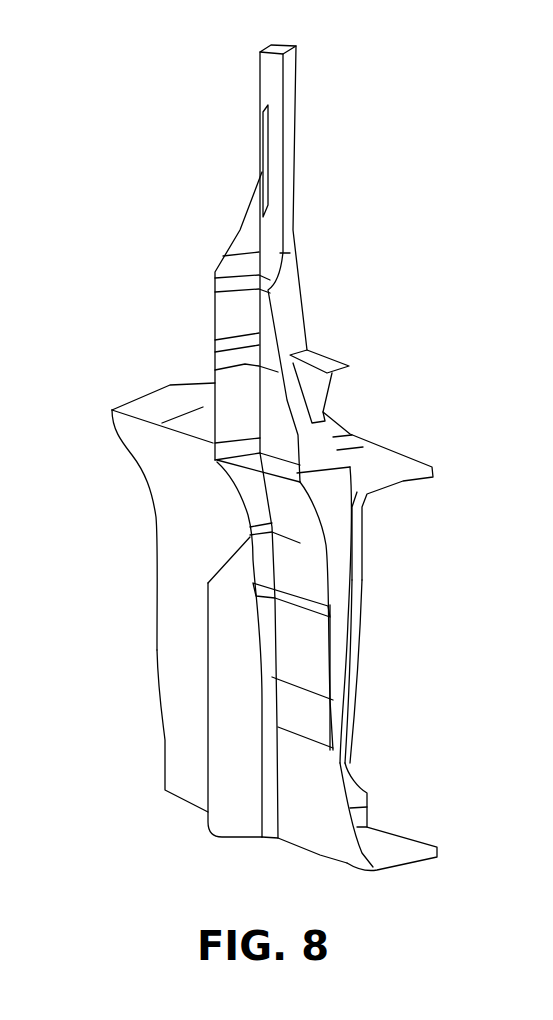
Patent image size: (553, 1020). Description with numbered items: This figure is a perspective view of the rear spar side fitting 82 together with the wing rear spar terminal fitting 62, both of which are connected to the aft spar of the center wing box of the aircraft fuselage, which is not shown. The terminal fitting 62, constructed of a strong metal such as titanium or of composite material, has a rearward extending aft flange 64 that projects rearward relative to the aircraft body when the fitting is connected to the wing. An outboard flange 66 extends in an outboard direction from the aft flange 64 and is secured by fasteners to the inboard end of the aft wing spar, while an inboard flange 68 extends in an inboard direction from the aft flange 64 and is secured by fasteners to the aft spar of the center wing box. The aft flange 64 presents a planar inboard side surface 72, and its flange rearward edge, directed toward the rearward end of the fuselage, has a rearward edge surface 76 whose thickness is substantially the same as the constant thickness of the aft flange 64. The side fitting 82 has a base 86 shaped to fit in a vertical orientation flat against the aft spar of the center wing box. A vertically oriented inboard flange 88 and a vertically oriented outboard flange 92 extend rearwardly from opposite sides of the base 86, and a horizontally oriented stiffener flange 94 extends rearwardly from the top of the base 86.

The terminal fitting 62 is at (433, 463).
The aft flange 64 is at (207, 678).
The outboard flange 66 is at (177, 538).
The inboard flange 68 is at (328, 817).
The inboard side surface 72 is at (220, 788).
The rearward edge surface 76 is at (208, 745).
The side fitting 82 is at (302, 297).
The base 86 is at (277, 578).
The inboard flange 88 is at (345, 567).
The outboard flange 92 is at (237, 497).
The stiffener flange 94 is at (250, 458).